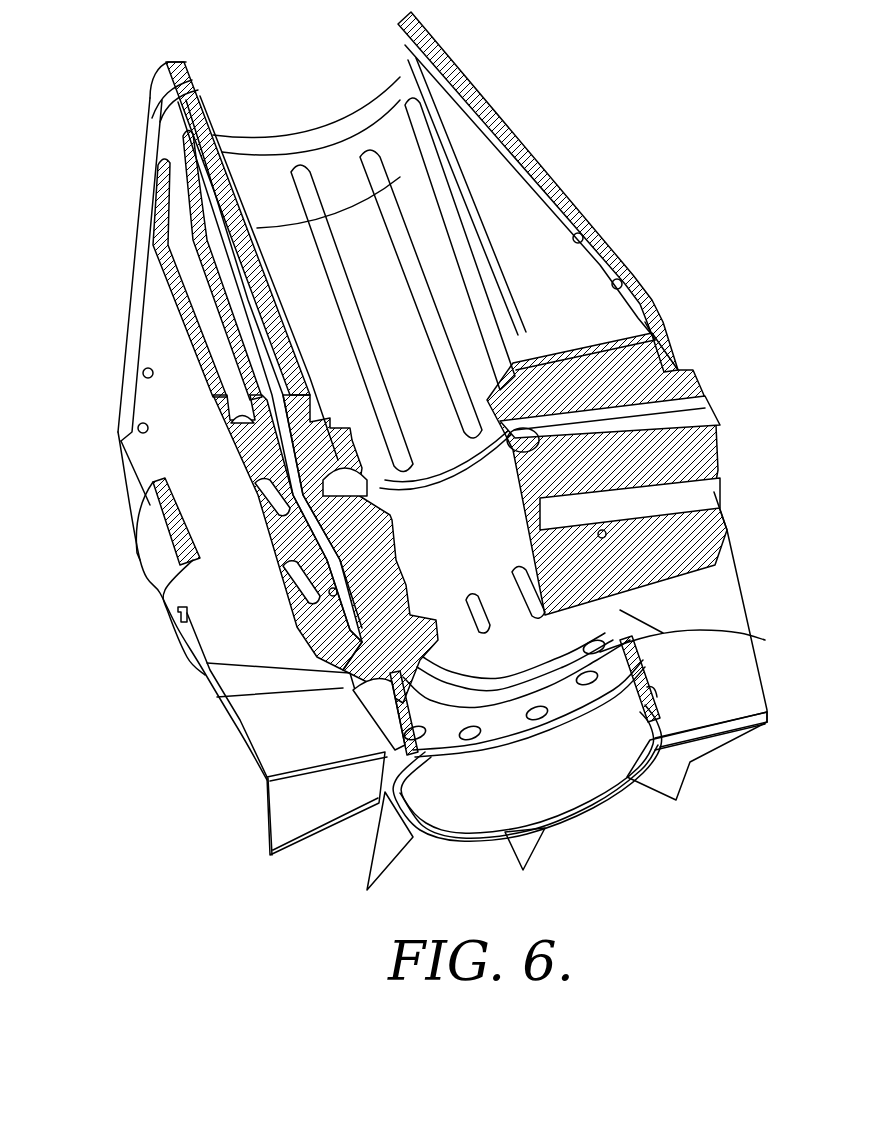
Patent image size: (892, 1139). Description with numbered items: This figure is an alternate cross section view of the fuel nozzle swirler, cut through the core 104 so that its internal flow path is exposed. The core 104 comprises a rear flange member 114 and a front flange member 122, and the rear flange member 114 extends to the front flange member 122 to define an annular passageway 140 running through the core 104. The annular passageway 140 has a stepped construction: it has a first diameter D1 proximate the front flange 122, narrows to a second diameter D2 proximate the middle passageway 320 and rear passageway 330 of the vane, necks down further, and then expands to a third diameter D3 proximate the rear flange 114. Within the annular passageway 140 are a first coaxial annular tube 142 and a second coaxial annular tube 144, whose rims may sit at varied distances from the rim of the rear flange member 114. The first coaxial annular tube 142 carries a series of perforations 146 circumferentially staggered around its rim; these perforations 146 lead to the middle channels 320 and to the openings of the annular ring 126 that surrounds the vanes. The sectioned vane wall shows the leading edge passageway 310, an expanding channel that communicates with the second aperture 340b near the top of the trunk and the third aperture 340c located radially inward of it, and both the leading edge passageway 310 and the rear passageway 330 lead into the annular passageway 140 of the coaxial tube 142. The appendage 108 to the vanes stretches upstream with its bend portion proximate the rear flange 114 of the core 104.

The front flange member 122 is at (163, 82).
The annular passageway 140 is at (347, 197).
The leading edge passageway 310 is at (487, 157).
The third aperture 340c is at (593, 243).
The second aperture 340b is at (640, 285).
The middle passageway 320 is at (703, 416).
The rear passageway 330 is at (693, 502).
The annular ring 126 is at (143, 538).
The appendage 108 is at (740, 592).
The second coaxial annular tube 144 is at (757, 642).
The perforations 146 is at (633, 663).
The core 104 is at (647, 768).
The rear flange member 114 is at (597, 803).
The first coaxial annular tube 142 is at (268, 778).
The first diameter D1 is at (397, 20).
The second diameter D2 is at (512, 497).
The third diameter D3 is at (430, 757).